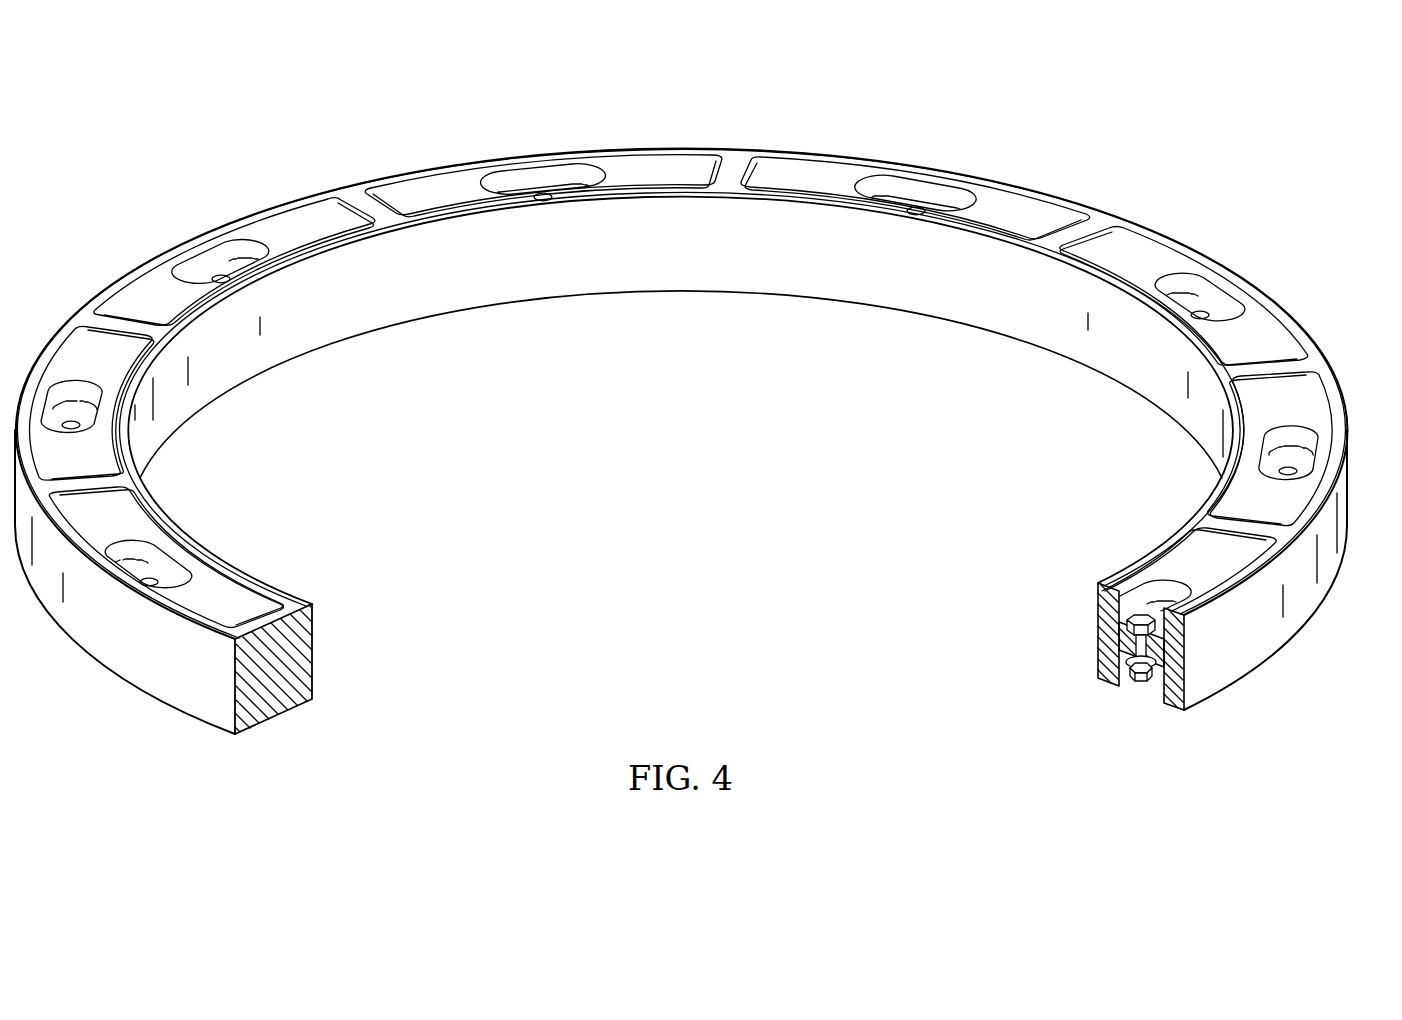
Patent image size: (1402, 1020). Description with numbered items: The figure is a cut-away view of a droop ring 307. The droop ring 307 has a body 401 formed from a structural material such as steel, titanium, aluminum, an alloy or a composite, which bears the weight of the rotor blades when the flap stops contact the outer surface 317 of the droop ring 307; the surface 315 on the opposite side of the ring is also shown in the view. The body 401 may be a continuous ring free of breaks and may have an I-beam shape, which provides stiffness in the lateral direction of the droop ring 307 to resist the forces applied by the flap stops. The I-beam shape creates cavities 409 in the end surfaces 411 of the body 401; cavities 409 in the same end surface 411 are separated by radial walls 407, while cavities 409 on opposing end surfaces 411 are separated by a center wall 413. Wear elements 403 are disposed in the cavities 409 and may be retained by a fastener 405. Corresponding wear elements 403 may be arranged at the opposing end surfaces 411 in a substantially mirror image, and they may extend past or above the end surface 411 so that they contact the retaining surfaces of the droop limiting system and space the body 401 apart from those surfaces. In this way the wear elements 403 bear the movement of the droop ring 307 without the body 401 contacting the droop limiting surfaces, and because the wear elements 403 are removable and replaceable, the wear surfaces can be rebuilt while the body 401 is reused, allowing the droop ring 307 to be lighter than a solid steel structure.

The droop ring 307 is at (370, 134).
The inner surface 315 is at (990, 318).
The outer surface 317 is at (1273, 638).
The body 401 is at (1097, 638).
The wear elements 403 is at (1138, 247).
The fastener 405 is at (1136, 672).
The radial walls 407 is at (1260, 536).
The cavities 409 is at (1200, 533).
The end surfaces 411 is at (1129, 564).
The center wall 413 is at (1183, 651).